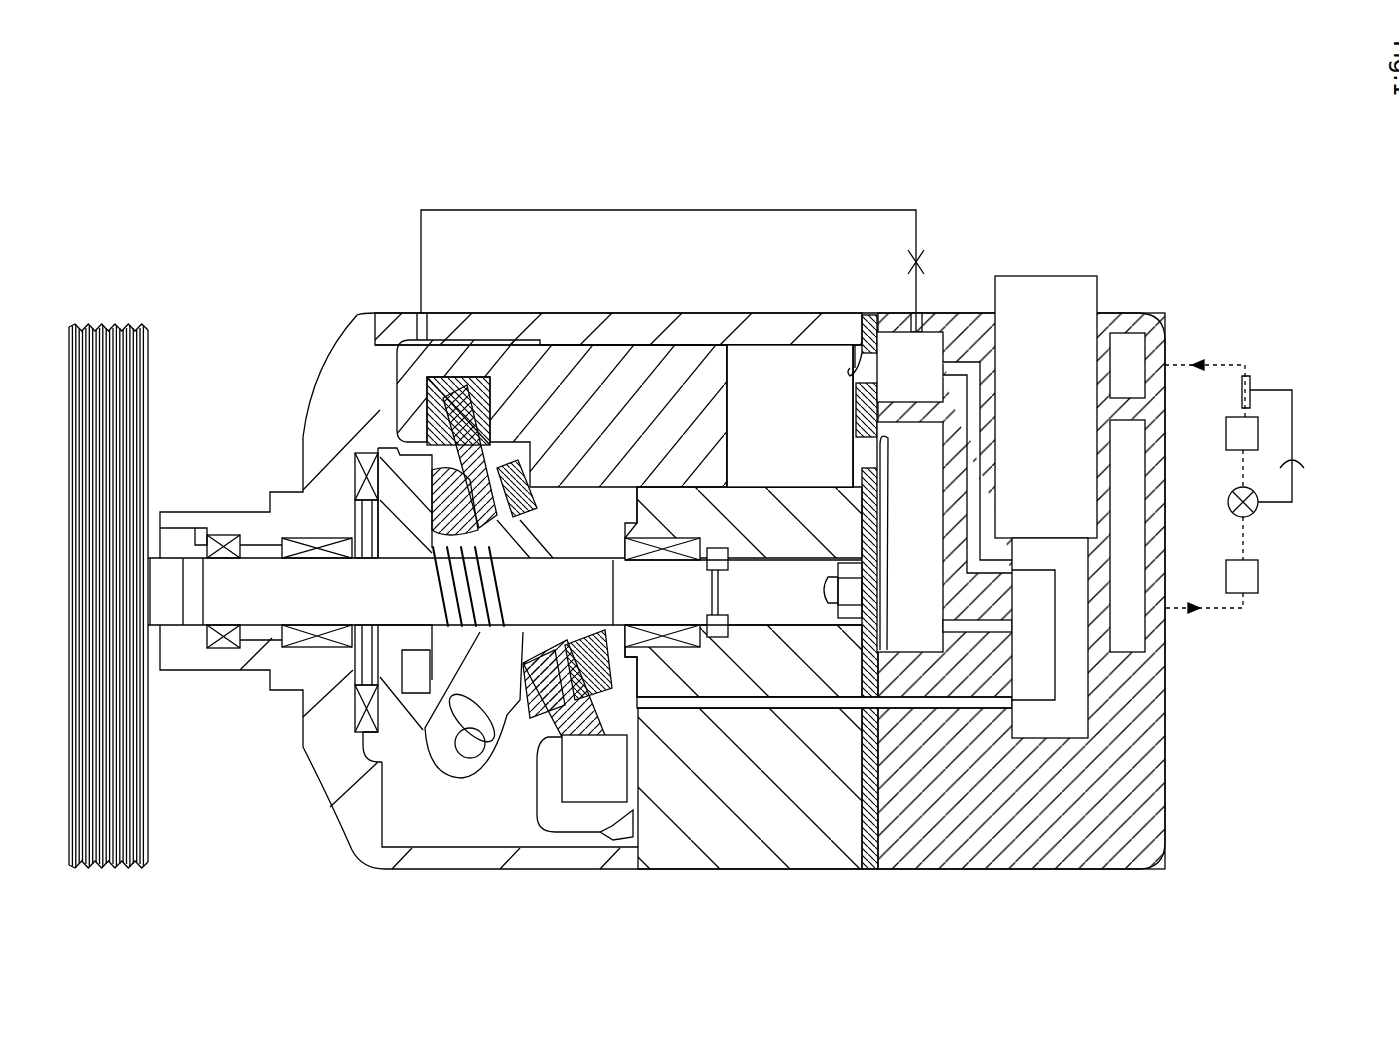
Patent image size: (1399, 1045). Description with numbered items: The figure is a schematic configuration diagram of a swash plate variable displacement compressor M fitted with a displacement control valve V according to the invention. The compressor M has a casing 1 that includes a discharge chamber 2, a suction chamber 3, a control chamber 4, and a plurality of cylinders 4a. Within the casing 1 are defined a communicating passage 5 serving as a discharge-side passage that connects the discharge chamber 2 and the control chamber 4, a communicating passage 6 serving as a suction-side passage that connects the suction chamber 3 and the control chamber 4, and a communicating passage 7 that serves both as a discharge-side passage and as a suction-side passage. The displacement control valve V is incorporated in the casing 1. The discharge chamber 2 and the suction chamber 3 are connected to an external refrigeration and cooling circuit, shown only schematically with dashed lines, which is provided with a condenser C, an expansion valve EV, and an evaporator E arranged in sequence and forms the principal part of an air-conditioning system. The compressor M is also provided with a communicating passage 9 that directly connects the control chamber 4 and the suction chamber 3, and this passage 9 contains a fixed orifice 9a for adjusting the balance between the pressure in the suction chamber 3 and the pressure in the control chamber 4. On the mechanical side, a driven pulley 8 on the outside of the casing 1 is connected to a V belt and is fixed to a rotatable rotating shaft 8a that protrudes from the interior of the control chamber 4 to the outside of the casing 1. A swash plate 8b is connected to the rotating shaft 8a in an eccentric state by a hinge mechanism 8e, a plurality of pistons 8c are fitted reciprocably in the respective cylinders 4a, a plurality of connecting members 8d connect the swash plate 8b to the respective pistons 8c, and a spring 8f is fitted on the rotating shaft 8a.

The casing 1 is at (702, 288).
The discharge chamber 2 is at (1128, 512).
The suction chamber 3 is at (1124, 376).
The control chamber 4 is at (492, 795).
The cylinders 4a is at (760, 350).
The communicating passage 5 is at (936, 600).
The communicating passage 6 is at (978, 313).
The communicating passage 7 is at (970, 703).
The driven pulley 8 is at (149, 324).
The rotating shaft 8a is at (325, 583).
The swash plate 8b is at (452, 398).
The pistons 8c is at (680, 365).
The connecting members 8d is at (433, 408).
The hinge mechanism 8e is at (427, 757).
The spring 8f is at (360, 668).
The communicating passage 9 is at (788, 206).
The fixed orifice 9a is at (918, 262).
The variable displacement compressor M is at (338, 140).
The displacement control valve V is at (1068, 247).
The evaporator E is at (1252, 425).
The expansion valve EV is at (1258, 512).
The condenser C is at (1258, 578).